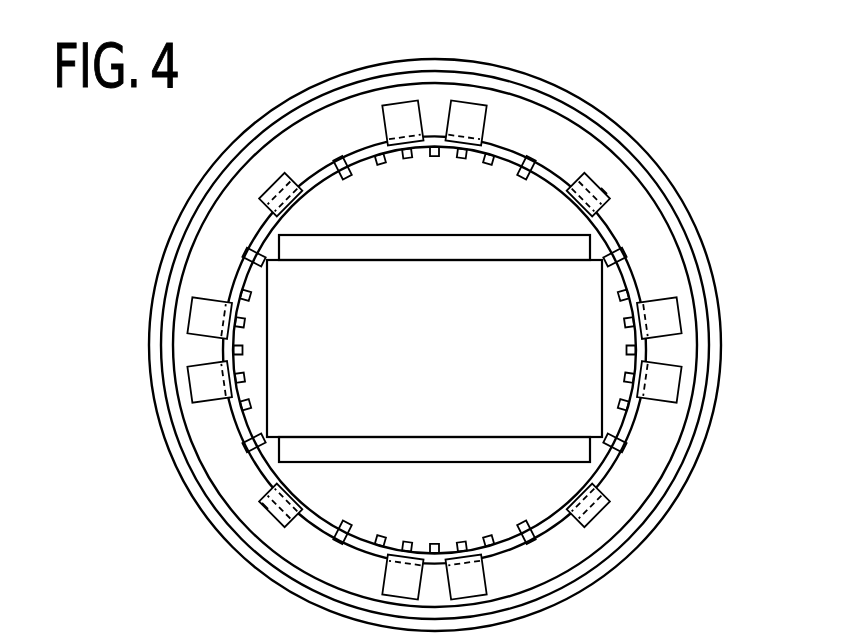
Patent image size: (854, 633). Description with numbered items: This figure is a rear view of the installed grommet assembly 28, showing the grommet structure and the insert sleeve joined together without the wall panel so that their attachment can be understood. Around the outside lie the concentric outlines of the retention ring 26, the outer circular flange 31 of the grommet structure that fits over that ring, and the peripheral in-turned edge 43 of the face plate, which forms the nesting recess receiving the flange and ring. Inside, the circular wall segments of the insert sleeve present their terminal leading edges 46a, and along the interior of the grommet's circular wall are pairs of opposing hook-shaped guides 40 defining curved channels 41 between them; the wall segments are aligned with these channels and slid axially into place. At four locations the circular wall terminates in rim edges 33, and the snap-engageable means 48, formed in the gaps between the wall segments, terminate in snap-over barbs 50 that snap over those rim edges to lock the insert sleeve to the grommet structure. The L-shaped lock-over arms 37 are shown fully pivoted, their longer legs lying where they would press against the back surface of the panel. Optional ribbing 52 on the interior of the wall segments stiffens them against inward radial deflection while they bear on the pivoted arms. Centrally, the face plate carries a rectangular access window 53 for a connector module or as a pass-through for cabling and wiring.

The grommet assembly 28 is at (116, 155).
The retention ring 26 is at (665, 430).
The outer circular flange 31 is at (678, 472).
The peripheral in-turned edge 43 is at (665, 518).
The terminal leading edges 46a is at (627, 295).
The hook-shaped guides 40 is at (350, 172).
The curved channels 41 is at (448, 170).
The rim edges 33 is at (624, 245).
The L-shaped lock-over arms 37 is at (403, 112).
The snap-over barbs 50 is at (283, 190).
The snap-engageable means 48 is at (610, 177).
The access window 53 is at (601, 335).
The ribbing 52 is at (488, 541).